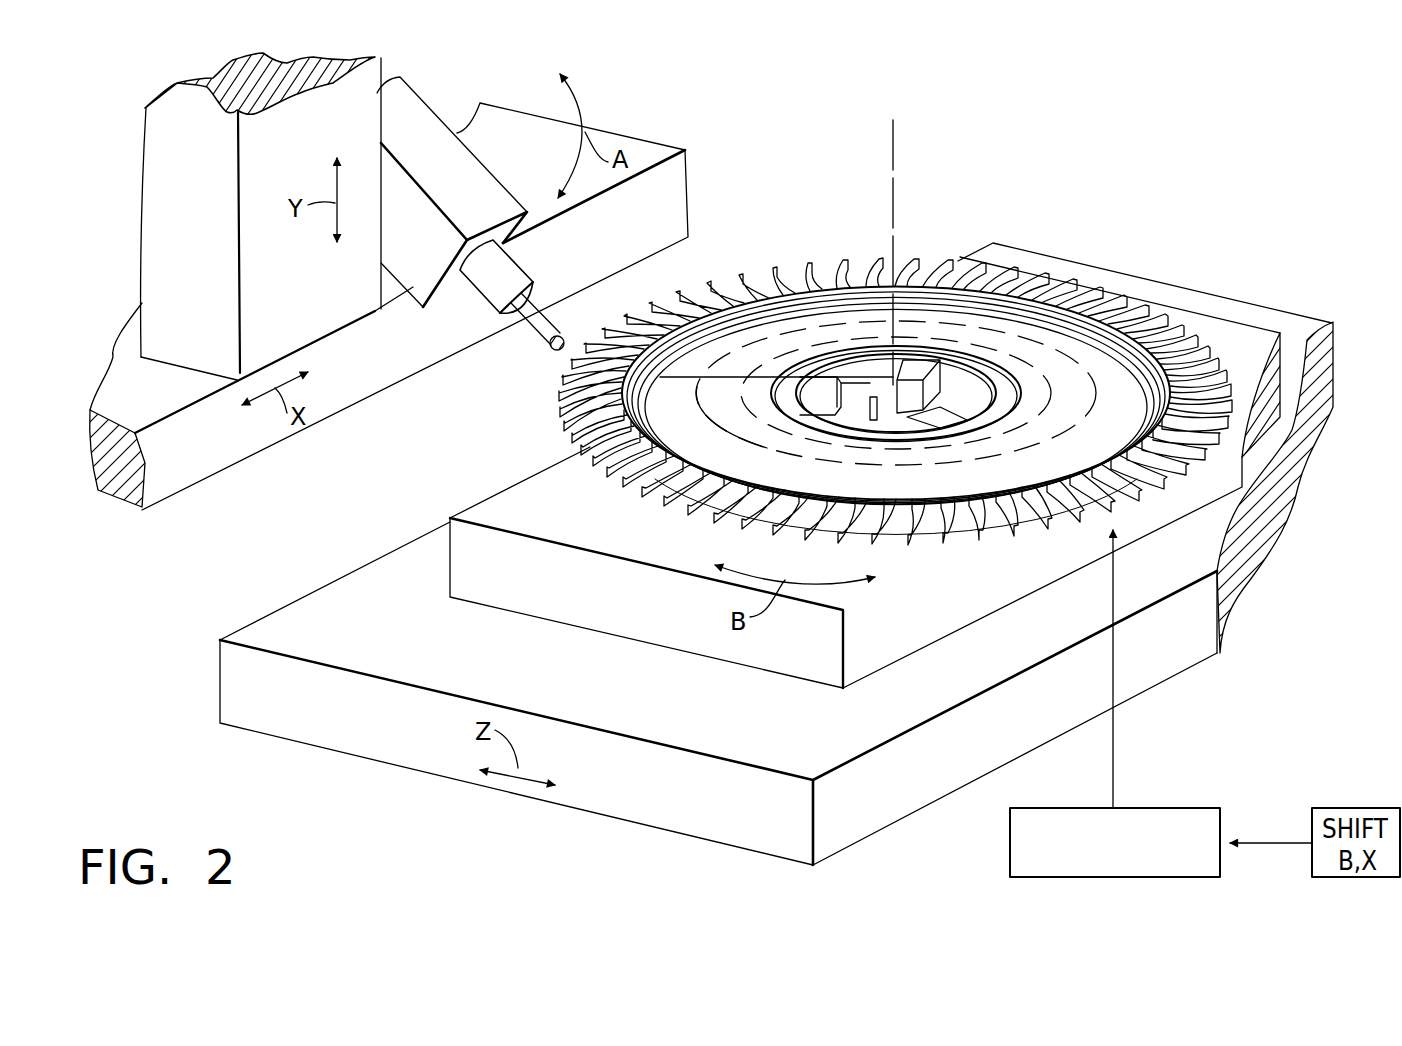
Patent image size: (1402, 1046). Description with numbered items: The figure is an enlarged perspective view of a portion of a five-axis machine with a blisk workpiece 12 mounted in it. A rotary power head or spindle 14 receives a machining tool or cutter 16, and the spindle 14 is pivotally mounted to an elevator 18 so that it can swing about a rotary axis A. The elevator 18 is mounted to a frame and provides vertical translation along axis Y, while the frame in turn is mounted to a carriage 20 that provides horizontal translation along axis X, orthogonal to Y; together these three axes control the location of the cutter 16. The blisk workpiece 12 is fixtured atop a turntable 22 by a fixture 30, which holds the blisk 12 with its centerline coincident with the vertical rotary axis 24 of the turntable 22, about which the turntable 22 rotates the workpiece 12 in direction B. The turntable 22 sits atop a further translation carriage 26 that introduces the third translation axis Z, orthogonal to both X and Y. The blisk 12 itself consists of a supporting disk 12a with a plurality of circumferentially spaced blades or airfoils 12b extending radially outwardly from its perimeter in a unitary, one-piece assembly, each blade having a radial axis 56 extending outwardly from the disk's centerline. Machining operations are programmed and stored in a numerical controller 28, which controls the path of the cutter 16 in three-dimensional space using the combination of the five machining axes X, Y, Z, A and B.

The blisk workpiece 12 is at (900, 373).
The supporting disk 12a is at (1126, 425).
The blades or airfoils 12b is at (805, 290).
The spindle 14 is at (508, 286).
The cutter 16 is at (552, 352).
The elevator 18 is at (284, 162).
The carriage 20 is at (629, 248).
The turntable 22 is at (559, 524).
The vertical rotary axis 24 is at (897, 192).
The translation carriage 26 is at (357, 643).
The numerical controller 28 is at (1010, 858).
The fixture 30 is at (940, 372).
The radial axis 56 is at (896, 390).